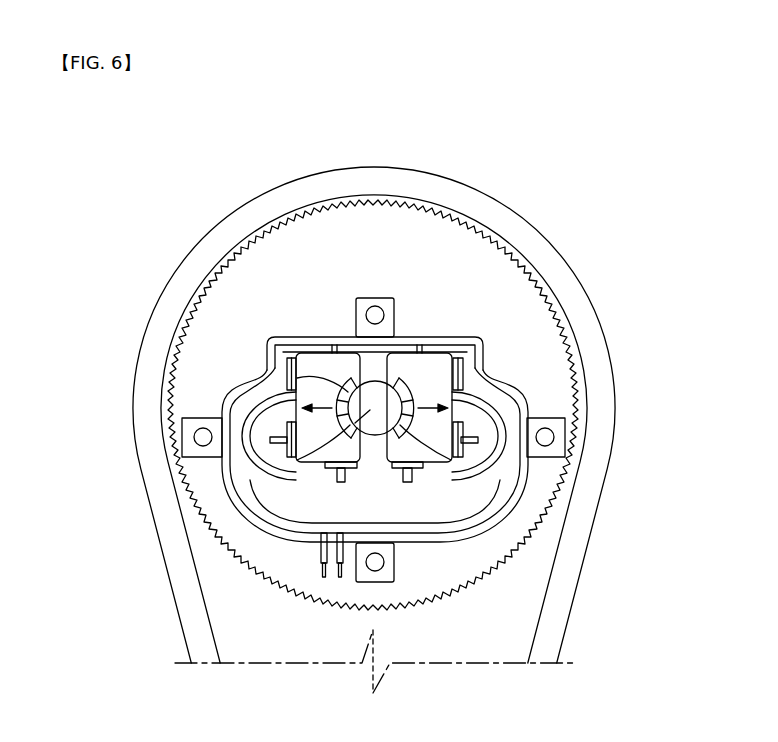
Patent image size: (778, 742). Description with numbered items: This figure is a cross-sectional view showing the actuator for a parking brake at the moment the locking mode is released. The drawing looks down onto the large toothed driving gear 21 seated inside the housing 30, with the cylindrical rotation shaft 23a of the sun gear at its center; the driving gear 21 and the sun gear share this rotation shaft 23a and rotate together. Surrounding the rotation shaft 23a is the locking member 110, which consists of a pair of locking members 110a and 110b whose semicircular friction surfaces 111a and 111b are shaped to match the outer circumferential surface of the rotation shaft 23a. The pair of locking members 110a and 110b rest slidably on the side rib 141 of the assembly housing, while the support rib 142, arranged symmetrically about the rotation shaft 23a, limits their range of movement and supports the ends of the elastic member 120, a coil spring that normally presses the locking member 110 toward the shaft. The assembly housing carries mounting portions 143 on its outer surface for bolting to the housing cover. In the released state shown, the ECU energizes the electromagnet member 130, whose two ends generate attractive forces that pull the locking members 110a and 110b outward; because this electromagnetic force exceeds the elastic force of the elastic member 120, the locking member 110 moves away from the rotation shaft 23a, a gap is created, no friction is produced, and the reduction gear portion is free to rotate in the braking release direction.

The locking member 110 is at (374, 289).
The locking member 110a is at (338, 362).
The locking member 110b is at (407, 362).
The friction surface 111a is at (288, 372).
The friction surface 111b is at (397, 383).
The elastic member 120 is at (514, 387).
The electromagnet member 130 is at (257, 472).
The side rib 141 is at (462, 442).
The support rib 142 is at (565, 462).
The mounting portion 143 is at (182, 423).
The driving gear 21 is at (230, 521).
The rotation shaft 23a is at (280, 468).
The housing 30 is at (150, 363).